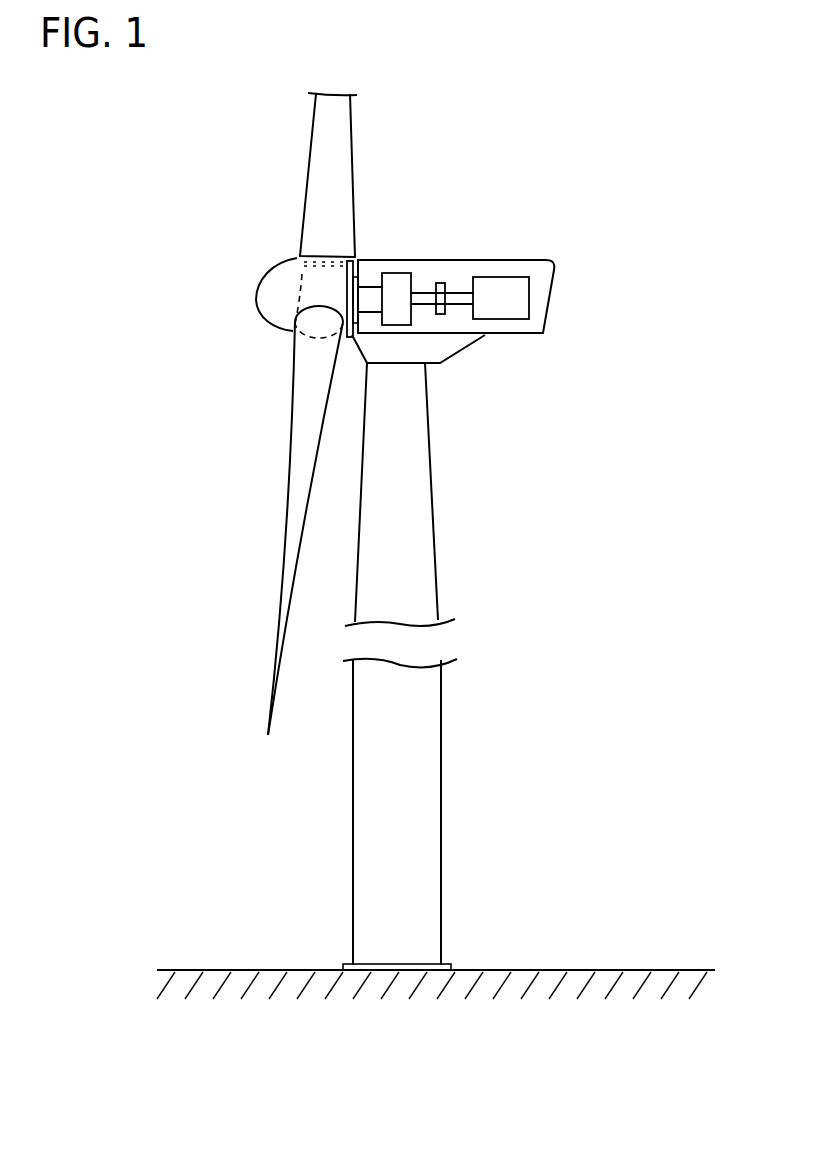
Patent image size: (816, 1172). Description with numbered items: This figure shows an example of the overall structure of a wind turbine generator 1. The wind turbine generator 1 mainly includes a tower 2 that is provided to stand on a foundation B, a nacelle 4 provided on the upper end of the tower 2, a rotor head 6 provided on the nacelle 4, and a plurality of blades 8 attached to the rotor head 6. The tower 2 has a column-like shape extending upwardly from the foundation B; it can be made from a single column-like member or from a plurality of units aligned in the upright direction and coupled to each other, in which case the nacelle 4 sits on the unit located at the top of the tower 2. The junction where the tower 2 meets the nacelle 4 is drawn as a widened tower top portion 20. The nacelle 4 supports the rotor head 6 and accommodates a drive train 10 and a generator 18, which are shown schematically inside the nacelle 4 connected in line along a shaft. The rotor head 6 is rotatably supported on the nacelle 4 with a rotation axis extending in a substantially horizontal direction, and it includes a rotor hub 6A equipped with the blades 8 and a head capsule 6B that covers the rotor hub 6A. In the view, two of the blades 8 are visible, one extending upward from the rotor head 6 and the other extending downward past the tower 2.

The wind turbine generator 1 is at (561, 170).
The tower 2 is at (442, 768).
The nacelle 4 is at (558, 293).
The rotor head 6 is at (238, 298).
The rotor hub 6A is at (312, 284).
The head capsule 6B is at (267, 317).
The blade 8 is at (310, 162).
The drive train 10 is at (423, 283).
The generator 18 is at (502, 292).
The tower top portion 20 is at (447, 347).
The foundation B is at (344, 966).